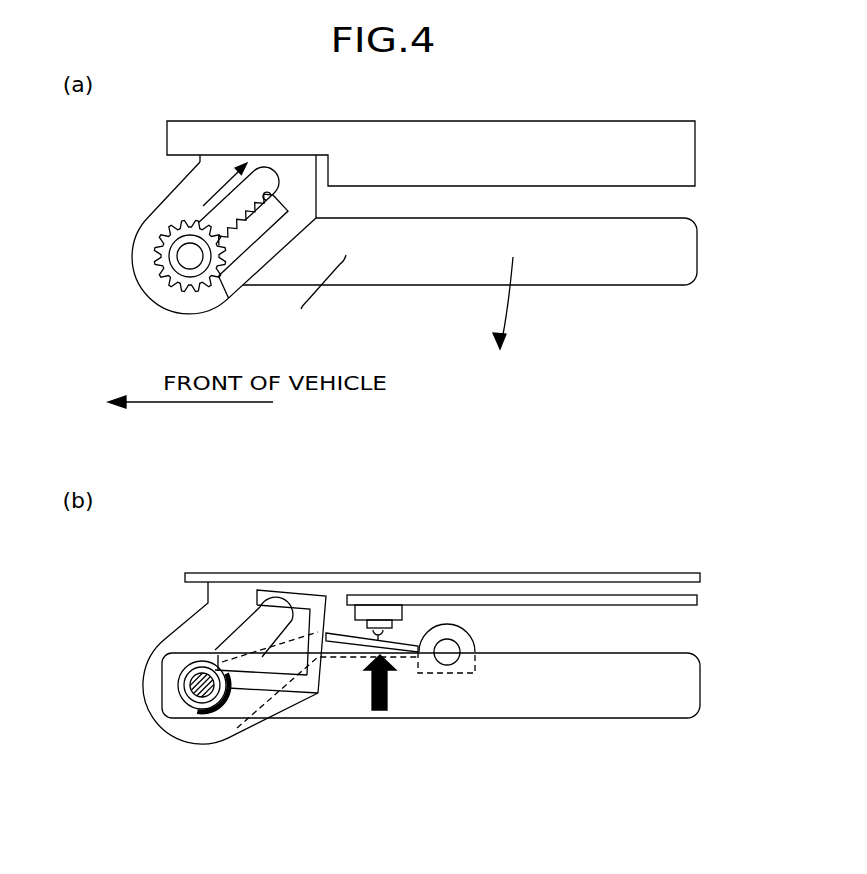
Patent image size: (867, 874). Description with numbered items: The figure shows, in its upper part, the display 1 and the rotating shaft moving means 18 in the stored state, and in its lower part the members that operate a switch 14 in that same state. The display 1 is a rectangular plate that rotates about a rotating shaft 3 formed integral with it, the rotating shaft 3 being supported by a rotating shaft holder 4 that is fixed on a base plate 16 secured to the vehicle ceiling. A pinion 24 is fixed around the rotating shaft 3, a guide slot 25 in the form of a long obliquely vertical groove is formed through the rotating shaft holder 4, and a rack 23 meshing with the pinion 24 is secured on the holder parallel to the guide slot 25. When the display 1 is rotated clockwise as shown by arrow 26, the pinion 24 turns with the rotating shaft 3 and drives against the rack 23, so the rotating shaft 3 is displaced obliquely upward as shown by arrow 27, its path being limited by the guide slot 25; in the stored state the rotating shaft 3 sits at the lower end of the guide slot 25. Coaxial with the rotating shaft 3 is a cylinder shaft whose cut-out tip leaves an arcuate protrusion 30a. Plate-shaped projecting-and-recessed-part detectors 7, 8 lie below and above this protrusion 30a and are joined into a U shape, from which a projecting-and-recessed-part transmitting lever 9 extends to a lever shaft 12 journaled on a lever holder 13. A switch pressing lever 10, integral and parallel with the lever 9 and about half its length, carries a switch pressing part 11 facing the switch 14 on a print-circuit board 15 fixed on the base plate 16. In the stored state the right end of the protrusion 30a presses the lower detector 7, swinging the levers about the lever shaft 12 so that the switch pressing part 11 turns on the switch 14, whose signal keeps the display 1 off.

The display 1 is at (630, 285).
The rotating shaft 3 is at (190, 257).
The rotating shaft holder 4 is at (162, 215).
The projecting-and-recessed-part detector 7 is at (265, 684).
The projecting-and-recessed-part detector 8 is at (295, 590).
The projecting-and-recessed-part transmitting lever 9 is at (419, 589).
The switch pressing lever 10 is at (408, 643).
The switch pressing part 11 is at (356, 640).
The lever shaft 12 is at (452, 668).
The lever holder 13 is at (473, 633).
The switch 14 is at (385, 607).
The print-circuit board 15 is at (597, 595).
The base plate 16 is at (615, 121).
The rotating shaft moving means 18 is at (323, 294).
The rack 23 is at (253, 243).
The pinion 24 is at (203, 288).
The guide slot 25 is at (277, 203).
The arrow 26 is at (512, 306).
The arrow 27 is at (205, 197).
The protrusion 30a is at (226, 710).